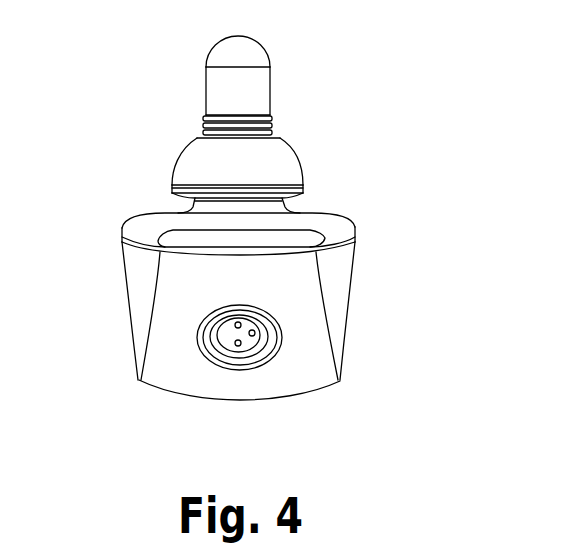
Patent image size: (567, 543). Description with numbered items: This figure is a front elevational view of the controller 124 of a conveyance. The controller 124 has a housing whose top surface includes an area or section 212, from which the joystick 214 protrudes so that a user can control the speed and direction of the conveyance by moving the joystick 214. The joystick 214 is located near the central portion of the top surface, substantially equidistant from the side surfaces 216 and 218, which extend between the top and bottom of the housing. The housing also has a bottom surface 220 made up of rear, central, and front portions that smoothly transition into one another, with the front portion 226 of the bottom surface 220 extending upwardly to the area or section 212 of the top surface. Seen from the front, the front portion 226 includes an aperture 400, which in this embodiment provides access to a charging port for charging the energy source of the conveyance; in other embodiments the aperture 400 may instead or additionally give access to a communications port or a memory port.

The controller 124 is at (437, 60).
The joystick 214 is at (258, 81).
The area or section of top surface 212 is at (272, 220).
The side surface 216 is at (130, 305).
The side surface 218 is at (350, 295).
The bottom surface 220 is at (153, 430).
The front portion of bottom surface 226 is at (303, 345).
The aperture 400 is at (200, 357).